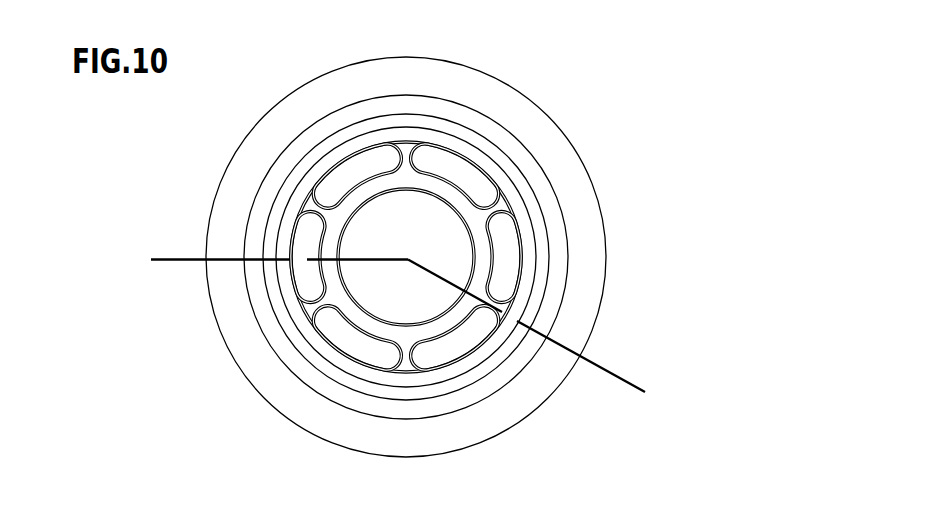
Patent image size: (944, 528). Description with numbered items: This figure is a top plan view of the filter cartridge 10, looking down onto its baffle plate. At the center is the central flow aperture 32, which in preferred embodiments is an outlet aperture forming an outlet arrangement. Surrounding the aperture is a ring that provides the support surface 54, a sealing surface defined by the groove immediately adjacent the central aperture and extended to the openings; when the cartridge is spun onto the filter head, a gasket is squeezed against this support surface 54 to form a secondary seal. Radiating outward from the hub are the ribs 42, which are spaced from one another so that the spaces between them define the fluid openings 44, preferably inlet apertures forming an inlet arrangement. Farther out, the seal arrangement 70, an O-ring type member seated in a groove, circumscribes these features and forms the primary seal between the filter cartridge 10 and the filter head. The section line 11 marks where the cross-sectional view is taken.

The filter cartridge 10 is at (710, 102).
The seal arrangement 70 is at (558, 248).
The ribs 42 is at (315, 313).
The fluid openings 44 is at (447, 148).
The central flow aperture 32 is at (462, 225).
The support surface 54 is at (402, 177).
The section line 11- 11 is at (160, 347).